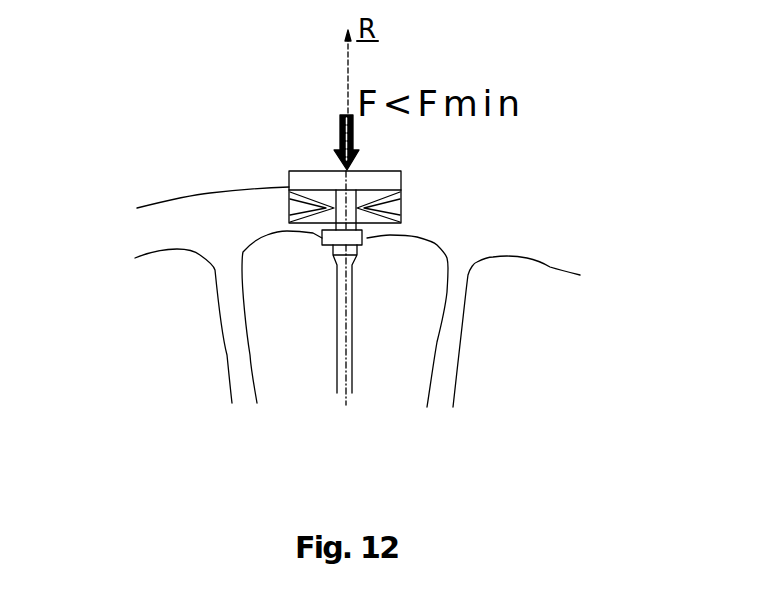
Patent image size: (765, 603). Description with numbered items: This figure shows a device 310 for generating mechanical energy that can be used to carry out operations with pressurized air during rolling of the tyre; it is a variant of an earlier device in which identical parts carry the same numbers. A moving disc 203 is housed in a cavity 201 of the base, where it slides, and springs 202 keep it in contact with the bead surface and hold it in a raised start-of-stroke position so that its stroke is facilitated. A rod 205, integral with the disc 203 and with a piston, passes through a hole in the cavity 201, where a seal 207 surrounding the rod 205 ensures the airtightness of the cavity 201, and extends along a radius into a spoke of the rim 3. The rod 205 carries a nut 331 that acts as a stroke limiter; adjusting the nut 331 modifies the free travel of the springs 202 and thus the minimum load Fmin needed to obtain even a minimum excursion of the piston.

The rim 3 is at (188, 194).
The device for generating mechanical energy 310 is at (317, 162).
The moving disc 203 is at (384, 183).
The cavity 201 is at (295, 204).
The springs 202 is at (394, 207).
The nut 331 is at (316, 249).
The rod 205 is at (333, 305).
The seal 207 is at (368, 240).